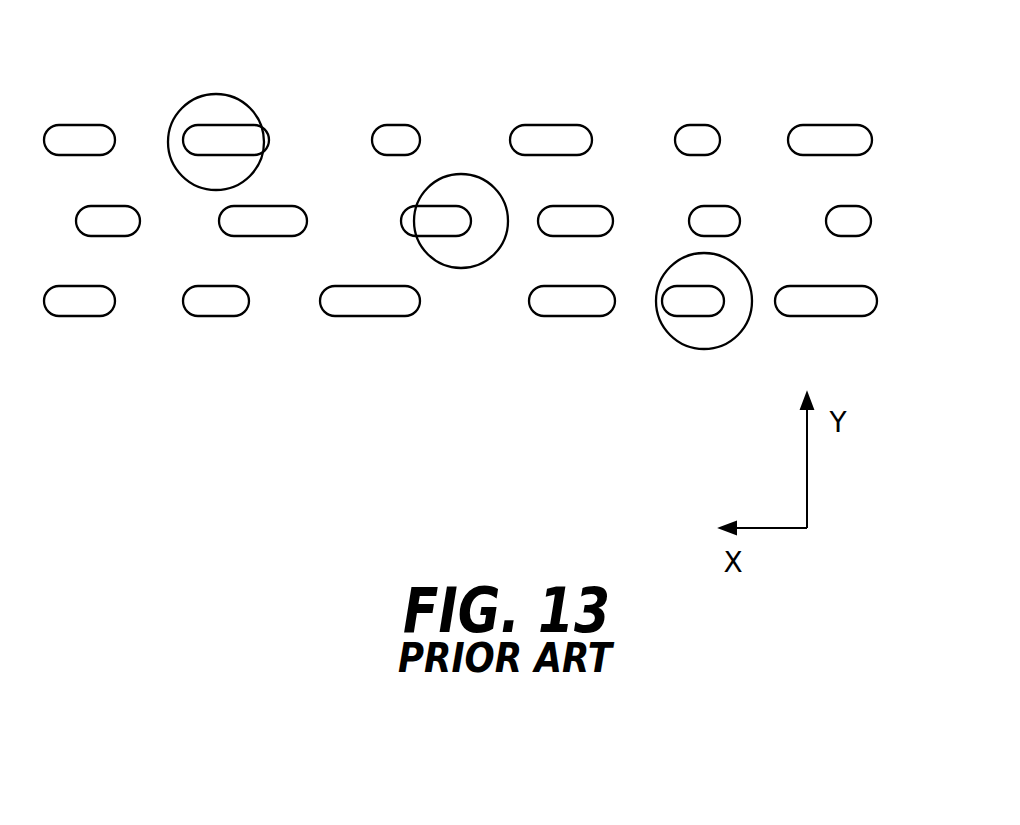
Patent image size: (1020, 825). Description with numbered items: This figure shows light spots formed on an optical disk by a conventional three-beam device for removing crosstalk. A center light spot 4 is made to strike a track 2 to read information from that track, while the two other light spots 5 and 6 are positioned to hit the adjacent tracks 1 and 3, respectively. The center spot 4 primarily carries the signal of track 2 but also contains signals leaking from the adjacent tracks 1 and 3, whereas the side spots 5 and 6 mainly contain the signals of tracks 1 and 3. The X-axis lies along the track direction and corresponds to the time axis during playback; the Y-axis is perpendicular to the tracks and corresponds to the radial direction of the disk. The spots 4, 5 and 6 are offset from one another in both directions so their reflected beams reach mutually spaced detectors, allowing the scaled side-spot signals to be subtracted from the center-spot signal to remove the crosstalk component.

The track 1 is at (872, 140).
The track 2 is at (871, 221).
The track 3 is at (877, 302).
The center light spot 4 is at (462, 174).
The side light spot 5 is at (225, 95).
The side light spot 6 is at (748, 280).